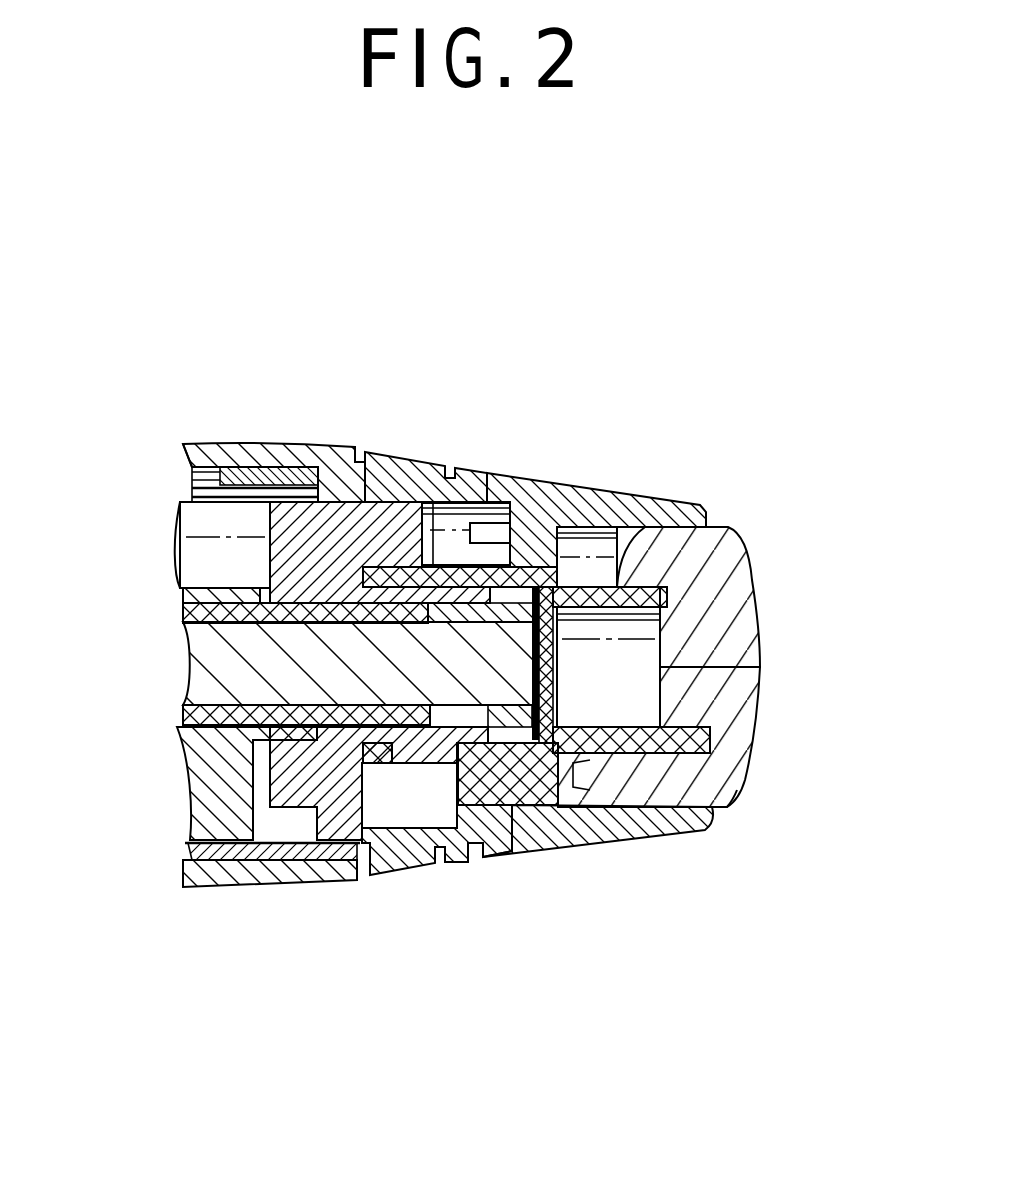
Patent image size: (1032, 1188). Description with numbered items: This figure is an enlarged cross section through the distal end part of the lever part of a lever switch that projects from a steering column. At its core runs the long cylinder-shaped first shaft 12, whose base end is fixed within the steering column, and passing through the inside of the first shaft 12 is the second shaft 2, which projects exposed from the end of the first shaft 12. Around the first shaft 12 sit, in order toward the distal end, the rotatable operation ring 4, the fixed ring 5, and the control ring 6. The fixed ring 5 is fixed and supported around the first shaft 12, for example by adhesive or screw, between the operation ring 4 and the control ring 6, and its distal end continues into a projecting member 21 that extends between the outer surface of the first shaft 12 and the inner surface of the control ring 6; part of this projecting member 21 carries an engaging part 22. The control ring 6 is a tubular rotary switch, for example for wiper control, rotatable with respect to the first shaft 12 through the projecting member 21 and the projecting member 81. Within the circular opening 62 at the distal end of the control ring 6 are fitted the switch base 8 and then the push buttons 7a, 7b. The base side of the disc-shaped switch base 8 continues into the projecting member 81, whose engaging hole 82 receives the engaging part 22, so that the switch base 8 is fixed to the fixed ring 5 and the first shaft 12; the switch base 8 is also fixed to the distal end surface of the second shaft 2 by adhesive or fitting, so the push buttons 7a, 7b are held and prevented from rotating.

The second shaft 2 is at (232, 661).
The operation ring 4 is at (238, 887).
The fixed ring 5 is at (390, 873).
The control ring 6 is at (680, 830).
The push button 7a is at (740, 590).
The push button 7b is at (740, 725).
The switch base 8 is at (703, 510).
The first shaft 12 is at (190, 613).
The projecting member 21 is at (372, 558).
The engaging part 22 is at (420, 592).
The circular opening 62 is at (713, 810).
The projecting member 81 is at (557, 488).
The engaging hole 82 is at (432, 575).